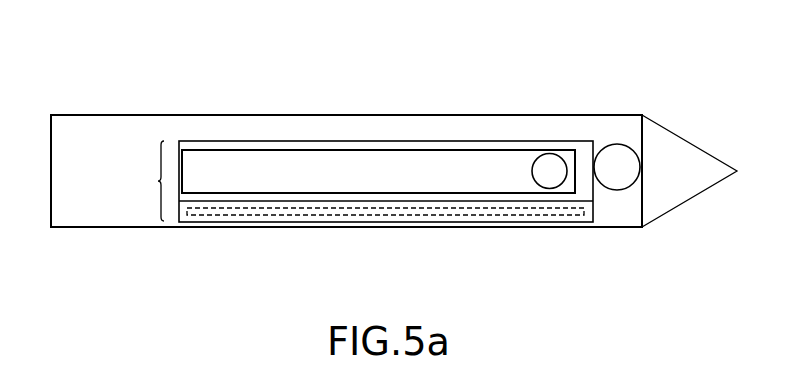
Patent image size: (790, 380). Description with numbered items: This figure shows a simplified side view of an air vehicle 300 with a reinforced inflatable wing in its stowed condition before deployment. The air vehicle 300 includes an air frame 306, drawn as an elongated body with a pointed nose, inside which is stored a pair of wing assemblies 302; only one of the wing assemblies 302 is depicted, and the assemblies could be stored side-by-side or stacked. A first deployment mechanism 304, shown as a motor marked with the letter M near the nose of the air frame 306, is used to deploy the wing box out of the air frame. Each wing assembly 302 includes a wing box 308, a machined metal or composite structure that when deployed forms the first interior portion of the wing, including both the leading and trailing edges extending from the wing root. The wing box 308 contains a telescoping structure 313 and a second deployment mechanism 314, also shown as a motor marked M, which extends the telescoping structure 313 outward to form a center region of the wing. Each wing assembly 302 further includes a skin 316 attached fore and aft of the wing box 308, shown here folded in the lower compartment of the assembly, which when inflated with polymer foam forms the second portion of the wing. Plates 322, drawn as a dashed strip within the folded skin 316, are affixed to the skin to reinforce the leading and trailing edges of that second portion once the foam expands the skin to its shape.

The air vehicle 300 is at (121, 81).
The wing assembly 302 is at (142, 181).
The first deployment mechanism 304 is at (607, 145).
The air frame 306 is at (258, 115).
The wing box 308 is at (350, 142).
The telescoping structure 313 is at (430, 173).
The second deployment mechanism 314 is at (533, 156).
The skin 316 is at (180, 224).
The plates 322 is at (342, 212).